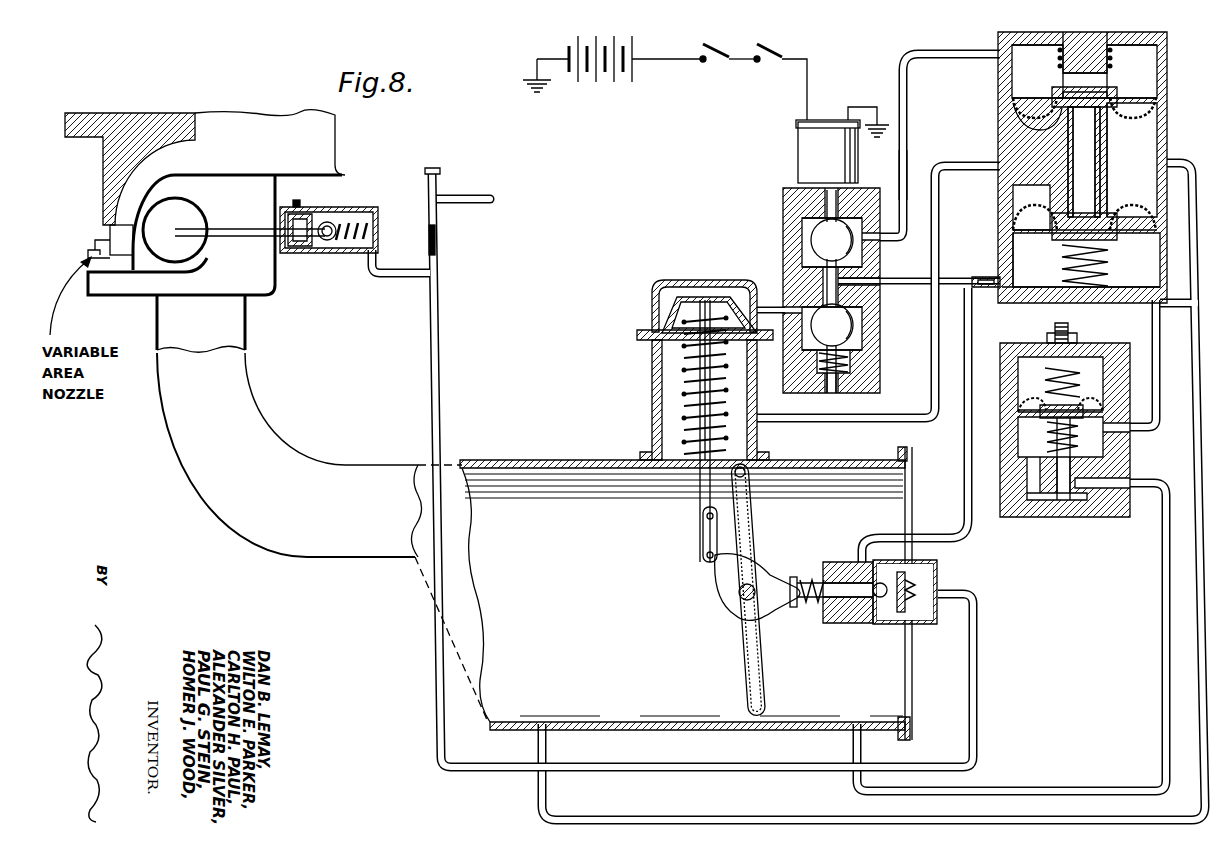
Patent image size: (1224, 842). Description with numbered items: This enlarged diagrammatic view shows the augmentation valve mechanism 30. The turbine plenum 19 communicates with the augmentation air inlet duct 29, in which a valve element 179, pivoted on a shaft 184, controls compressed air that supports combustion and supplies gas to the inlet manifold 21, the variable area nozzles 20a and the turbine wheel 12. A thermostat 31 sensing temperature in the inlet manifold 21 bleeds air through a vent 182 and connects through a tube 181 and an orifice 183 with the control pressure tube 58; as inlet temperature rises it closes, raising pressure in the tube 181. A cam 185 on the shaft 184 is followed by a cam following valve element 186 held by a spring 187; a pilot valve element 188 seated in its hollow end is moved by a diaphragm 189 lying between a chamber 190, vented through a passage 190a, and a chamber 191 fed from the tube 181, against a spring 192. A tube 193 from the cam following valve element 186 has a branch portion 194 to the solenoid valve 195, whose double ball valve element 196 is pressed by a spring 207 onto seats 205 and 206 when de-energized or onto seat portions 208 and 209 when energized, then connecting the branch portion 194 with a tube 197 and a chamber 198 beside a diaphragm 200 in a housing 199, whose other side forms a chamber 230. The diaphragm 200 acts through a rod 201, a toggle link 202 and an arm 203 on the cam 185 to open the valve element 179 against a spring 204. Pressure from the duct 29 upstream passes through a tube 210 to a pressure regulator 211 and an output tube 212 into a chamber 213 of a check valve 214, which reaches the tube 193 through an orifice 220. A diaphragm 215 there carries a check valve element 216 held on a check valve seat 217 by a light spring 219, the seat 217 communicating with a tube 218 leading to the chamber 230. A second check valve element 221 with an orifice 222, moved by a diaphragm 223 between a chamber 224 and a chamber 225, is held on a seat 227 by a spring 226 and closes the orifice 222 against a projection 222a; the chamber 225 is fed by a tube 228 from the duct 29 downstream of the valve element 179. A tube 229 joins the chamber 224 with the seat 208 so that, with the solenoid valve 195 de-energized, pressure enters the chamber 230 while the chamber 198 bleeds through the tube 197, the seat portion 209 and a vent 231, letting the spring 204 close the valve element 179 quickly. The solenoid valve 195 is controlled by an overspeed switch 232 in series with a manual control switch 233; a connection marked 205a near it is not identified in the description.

The turbine wheel 12 is at (100, 201).
The plenum 19 is at (146, 289).
The variable area nozzles 20a is at (110, 243).
The inlet manifold 21 is at (190, 258).
The augmentation air inlet duct 29 is at (282, 455).
The augmentation valve mechanism 30 is at (663, 183).
The thermostat 31 is at (285, 263).
The control pressure tube 58 is at (478, 196).
The valve element 179 is at (756, 510).
The tube 181 is at (428, 331).
The vent 182 is at (300, 200).
The orifice 183 is at (437, 240).
The shaft 184 is at (739, 593).
The cam 185 is at (740, 608).
The cam following valve element 186 is at (793, 577).
The spring 187 is at (802, 606).
The pilot valve element 188 is at (870, 568).
The diaphragm 189 is at (912, 566).
The chamber 190 is at (893, 615).
The passage 190a is at (905, 612).
The chamber 191 is at (937, 572).
The spring 192 is at (880, 607).
The tube 193 is at (968, 318).
The branch portion 194 is at (913, 281).
The solenoid valve 195 is at (783, 222).
The double ball valve element 196 is at (818, 232).
The tube 197 is at (770, 312).
The chamber 198 is at (704, 290).
The housing 199 is at (655, 295).
The diaphragm 200 is at (677, 300).
The rod 201 is at (705, 383).
The toggle link 202 is at (703, 527).
The arm 203 is at (707, 556).
The spring 204 is at (690, 425).
The seat 205 is at (878, 160).
The conduit 205a is at (901, 180).
The seat 206 is at (823, 290).
The spring 207 is at (847, 350).
The seat portion 208 is at (820, 273).
The seat portion 209 is at (853, 352).
The tube 210 is at (1142, 490).
The pressure regulator 211 is at (1130, 453).
The output tube 212 is at (1152, 330).
The chamber 213 is at (1040, 300).
The check valve 214 is at (997, 204).
The diaphragm 215 is at (1108, 240).
The check valve element 216 is at (1065, 240).
The check valve seat 217 is at (1100, 200).
The tube 218 is at (858, 420).
The light spring 219 is at (1105, 262).
The orifice 220 is at (973, 278).
The second check valve element 221 is at (1058, 75).
The orifice 222 is at (1105, 88).
The projection 222a is at (1100, 55).
The diaphragm 223 is at (1012, 100).
The chamber 224 is at (1012, 75).
The chamber 225 is at (1160, 140).
The spring 226 is at (1062, 92).
The seat 227 is at (1048, 118).
The tube 228 is at (1150, 304).
The tube 229 is at (925, 44).
The chamber 230 is at (656, 353).
The vent 231 is at (835, 385).
The overspeed switch 232 is at (757, 62).
The manual control switch 233 is at (708, 63).